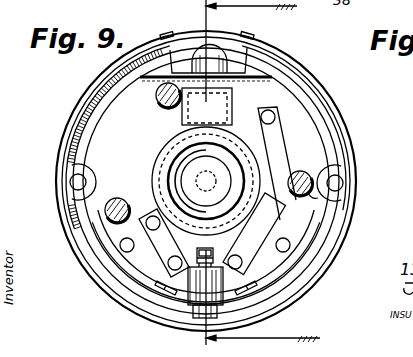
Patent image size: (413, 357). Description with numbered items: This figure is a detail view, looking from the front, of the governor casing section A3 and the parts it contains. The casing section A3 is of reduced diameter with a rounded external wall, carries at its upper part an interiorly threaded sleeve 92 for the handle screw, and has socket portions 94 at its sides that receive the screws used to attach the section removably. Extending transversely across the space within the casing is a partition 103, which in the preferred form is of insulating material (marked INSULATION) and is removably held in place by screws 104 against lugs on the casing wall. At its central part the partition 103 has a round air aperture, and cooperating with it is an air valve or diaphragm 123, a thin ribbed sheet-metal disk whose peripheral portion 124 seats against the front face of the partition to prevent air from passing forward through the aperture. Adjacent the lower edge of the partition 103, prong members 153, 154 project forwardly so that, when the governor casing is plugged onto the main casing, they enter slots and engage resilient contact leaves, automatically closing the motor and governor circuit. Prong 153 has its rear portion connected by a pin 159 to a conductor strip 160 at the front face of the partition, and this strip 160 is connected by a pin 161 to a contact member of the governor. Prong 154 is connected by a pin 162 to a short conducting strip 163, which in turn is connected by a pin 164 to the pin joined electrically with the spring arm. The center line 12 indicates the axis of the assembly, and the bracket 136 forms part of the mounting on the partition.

The casing section A3 is at (81, 109).
The center axis dimension 12 is at (263, 172).
The interiorly threaded sleeve 92 is at (222, 61).
The socket portions 94 is at (72, 182).
The partition 103 is at (125, 124).
The screws 104 is at (160, 104).
The air valve or diaphragm 123 is at (240, 153).
The peripheral portion of the diaphragm 124 is at (228, 157).
The contact bracket 136 is at (247, 235).
The prong member 153 is at (253, 287).
The prong member 154 is at (157, 287).
The pin 159 is at (242, 260).
The conductor strip 160 is at (273, 157).
The pin 161 is at (276, 114).
The pin 162 is at (168, 266).
The short conducting strip 163 is at (163, 248).
The pin 164 is at (145, 222).
The insulation INSULATION is at (280, 96).